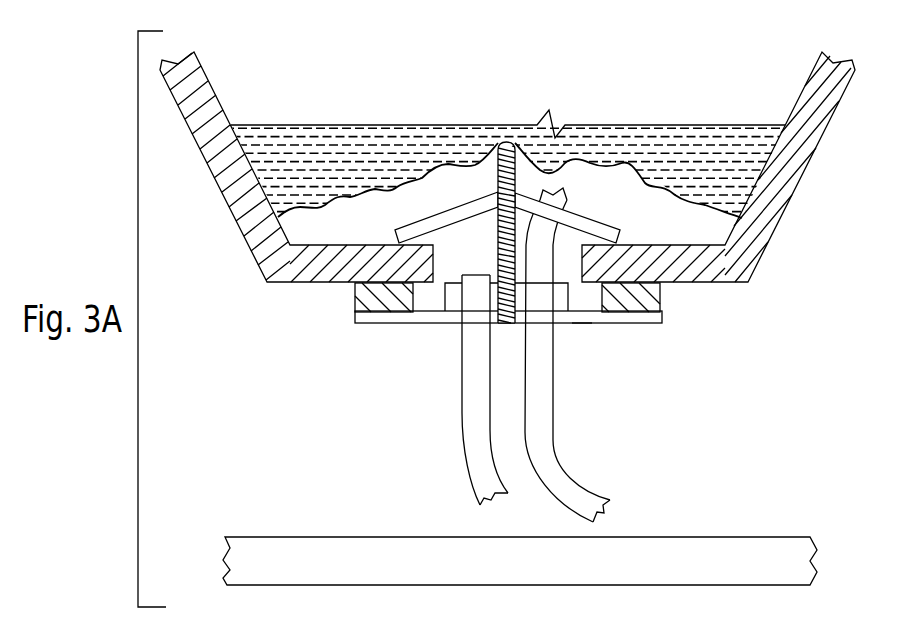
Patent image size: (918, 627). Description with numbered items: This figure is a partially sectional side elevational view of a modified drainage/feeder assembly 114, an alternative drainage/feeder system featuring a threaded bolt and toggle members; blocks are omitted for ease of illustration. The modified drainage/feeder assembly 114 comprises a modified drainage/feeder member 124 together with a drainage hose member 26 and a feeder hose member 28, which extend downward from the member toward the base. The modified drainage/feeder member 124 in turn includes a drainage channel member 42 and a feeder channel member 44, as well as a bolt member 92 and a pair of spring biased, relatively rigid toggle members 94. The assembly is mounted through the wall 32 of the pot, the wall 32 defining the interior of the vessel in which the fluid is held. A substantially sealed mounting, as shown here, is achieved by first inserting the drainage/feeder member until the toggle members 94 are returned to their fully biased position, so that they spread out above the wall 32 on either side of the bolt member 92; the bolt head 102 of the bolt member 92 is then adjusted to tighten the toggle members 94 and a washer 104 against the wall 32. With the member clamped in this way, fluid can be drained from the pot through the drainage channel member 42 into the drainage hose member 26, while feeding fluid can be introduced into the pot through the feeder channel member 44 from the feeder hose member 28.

The wall 32 is at (834, 62).
The bolt member 92 is at (498, 176).
The toggle members 94 is at (407, 228).
The washer 104 is at (355, 296).
The drainage channel member 42 is at (430, 312).
The feeder channel member 44 is at (570, 298).
The bolt head 102 is at (507, 323).
The modified drainage/feeder member 124 is at (580, 325).
The modified drainage/feeder assembly 114 is at (572, 393).
The drainage hose member 26 is at (462, 468).
The feeder hose member 28 is at (587, 487).